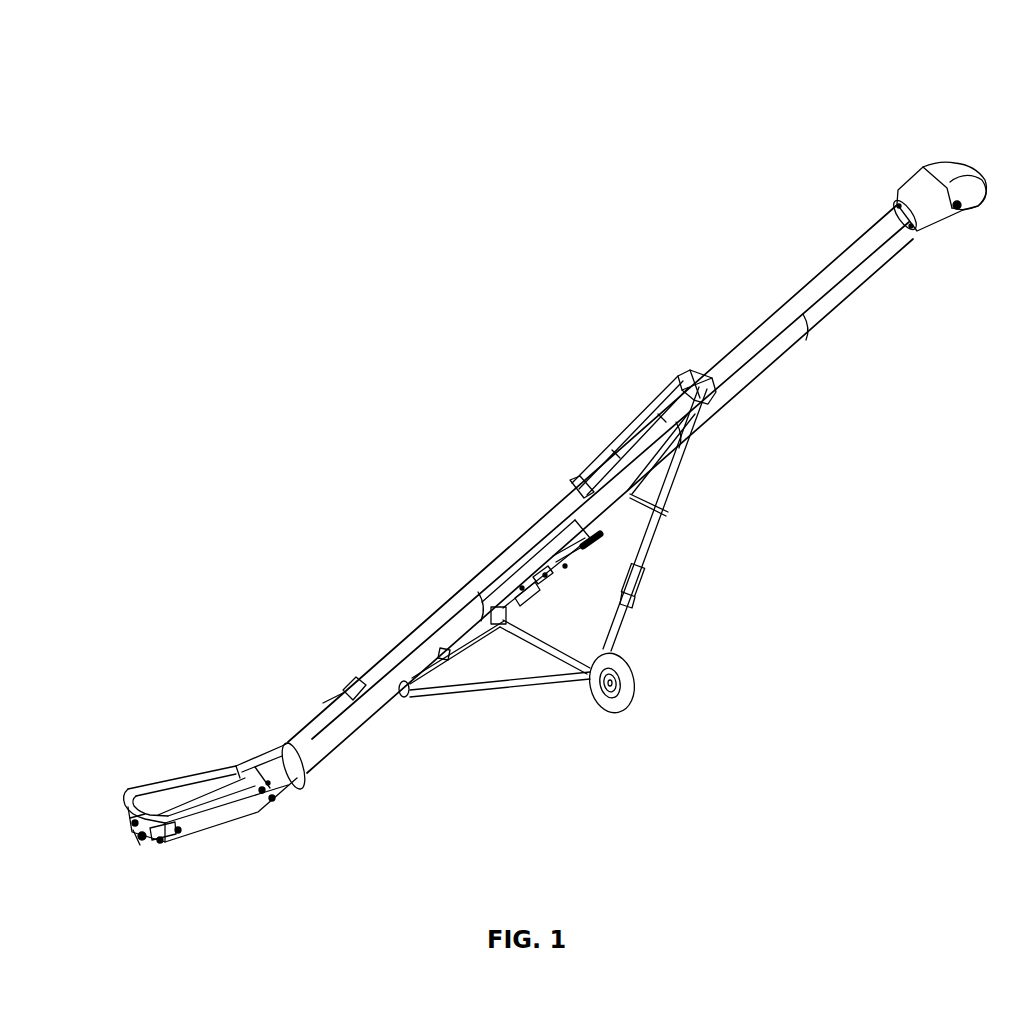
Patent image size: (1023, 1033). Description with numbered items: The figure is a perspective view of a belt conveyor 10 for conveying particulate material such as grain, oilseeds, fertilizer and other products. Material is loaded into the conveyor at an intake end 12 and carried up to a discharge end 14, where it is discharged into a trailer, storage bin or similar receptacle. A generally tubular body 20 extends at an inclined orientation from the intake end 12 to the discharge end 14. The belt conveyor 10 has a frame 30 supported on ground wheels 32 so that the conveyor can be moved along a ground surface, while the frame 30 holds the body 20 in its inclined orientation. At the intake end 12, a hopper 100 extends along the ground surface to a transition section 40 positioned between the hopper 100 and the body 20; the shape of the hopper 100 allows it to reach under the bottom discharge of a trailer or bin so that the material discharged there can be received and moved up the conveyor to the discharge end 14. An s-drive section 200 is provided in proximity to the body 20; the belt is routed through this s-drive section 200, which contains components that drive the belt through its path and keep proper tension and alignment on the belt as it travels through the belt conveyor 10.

The belt conveyor 10 is at (522, 326).
The intake end 12 is at (168, 774).
The discharge end 14 is at (947, 150).
The tubular body 20 is at (753, 332).
The frame 30 is at (653, 553).
The ground wheels 32 is at (633, 680).
The transition section 40 is at (291, 778).
The hopper 100 is at (216, 789).
The s-drive section 200 is at (553, 580).